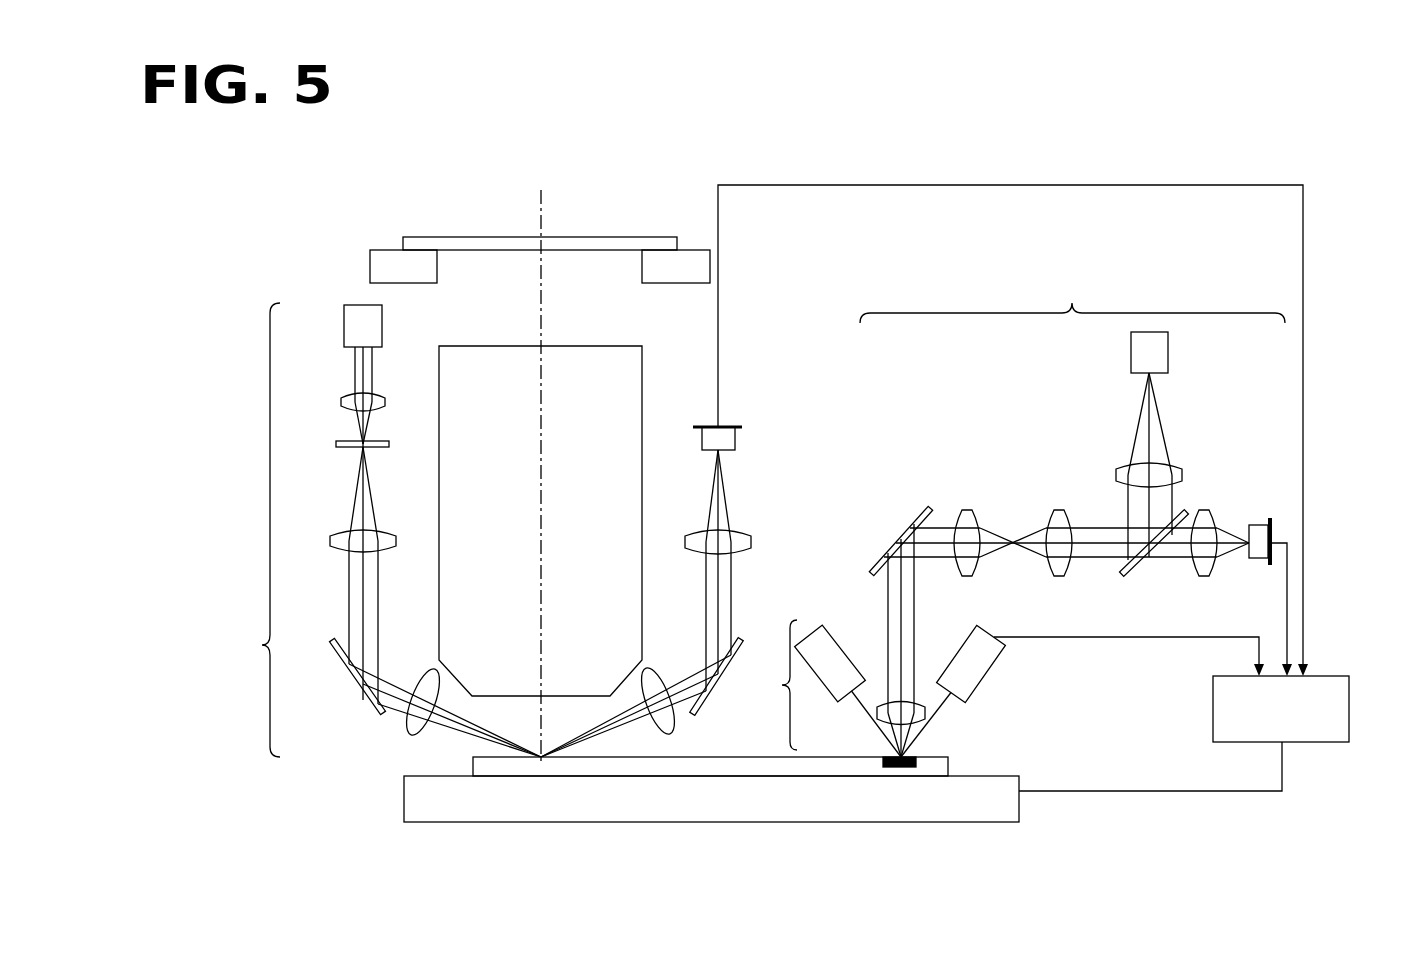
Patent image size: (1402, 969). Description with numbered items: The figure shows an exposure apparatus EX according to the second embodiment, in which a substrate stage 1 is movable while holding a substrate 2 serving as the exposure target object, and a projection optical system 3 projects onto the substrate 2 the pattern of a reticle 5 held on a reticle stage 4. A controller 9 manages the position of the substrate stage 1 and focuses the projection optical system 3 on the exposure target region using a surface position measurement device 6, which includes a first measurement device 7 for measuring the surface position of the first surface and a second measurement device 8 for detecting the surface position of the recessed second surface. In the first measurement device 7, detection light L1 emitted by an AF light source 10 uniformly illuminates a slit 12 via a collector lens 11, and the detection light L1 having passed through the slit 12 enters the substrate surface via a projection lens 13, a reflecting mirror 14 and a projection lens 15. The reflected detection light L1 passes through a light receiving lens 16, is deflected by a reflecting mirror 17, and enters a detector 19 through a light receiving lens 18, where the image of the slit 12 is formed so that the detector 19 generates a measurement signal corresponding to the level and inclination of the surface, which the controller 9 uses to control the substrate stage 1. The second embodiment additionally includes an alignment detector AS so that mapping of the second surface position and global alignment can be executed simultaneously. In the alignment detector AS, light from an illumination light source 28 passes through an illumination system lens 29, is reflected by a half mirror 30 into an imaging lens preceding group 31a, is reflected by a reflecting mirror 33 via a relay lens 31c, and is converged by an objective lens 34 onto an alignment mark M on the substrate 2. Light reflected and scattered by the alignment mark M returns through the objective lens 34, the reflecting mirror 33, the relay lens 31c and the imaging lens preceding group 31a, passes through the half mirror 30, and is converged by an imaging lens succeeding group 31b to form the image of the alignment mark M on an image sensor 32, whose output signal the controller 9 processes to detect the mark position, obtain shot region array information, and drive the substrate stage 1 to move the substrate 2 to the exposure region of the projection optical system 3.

The substrate stage 1 is at (404, 797).
The substrate 2 is at (473, 770).
The projection optical system 3 is at (463, 346).
The reticle stage 4 is at (370, 254).
The reticle 5 is at (410, 237).
The surface position measurement device 6 is at (245, 663).
The first measurement device 7 is at (258, 530).
The second measurement device 8 is at (1010, 688).
The controller 9 is at (1338, 676).
The AF light source 10 is at (344, 318).
The collector lens 11 is at (341, 400).
The slit 12 is at (340, 449).
The projection lens 13 is at (335, 535).
The reflecting mirror 14 is at (335, 640).
The projection lens 15 is at (400, 718).
The light receiving lens 16 is at (688, 735).
The reflecting mirror 17 is at (735, 640).
The light receiving lens 18 is at (690, 532).
The detector 19 is at (703, 426).
The illumination light source 28 is at (1168, 347).
The illumination system lens 29 is at (1178, 468).
The half mirror 30 is at (1140, 540).
The imaging lens preceding group 31a is at (1058, 509).
The imaging lens succeeding group 31b is at (1212, 509).
The relay lens 31c is at (967, 509).
The image sensor 32 is at (1258, 518).
The reflecting mirror 33 is at (912, 506).
The objective lens 34 is at (887, 709).
The alignment detector AS is at (1072, 299).
The exposure apparatus EX is at (612, 126).
The alignment mark M is at (925, 762).
The detection light L1 is at (470, 727).